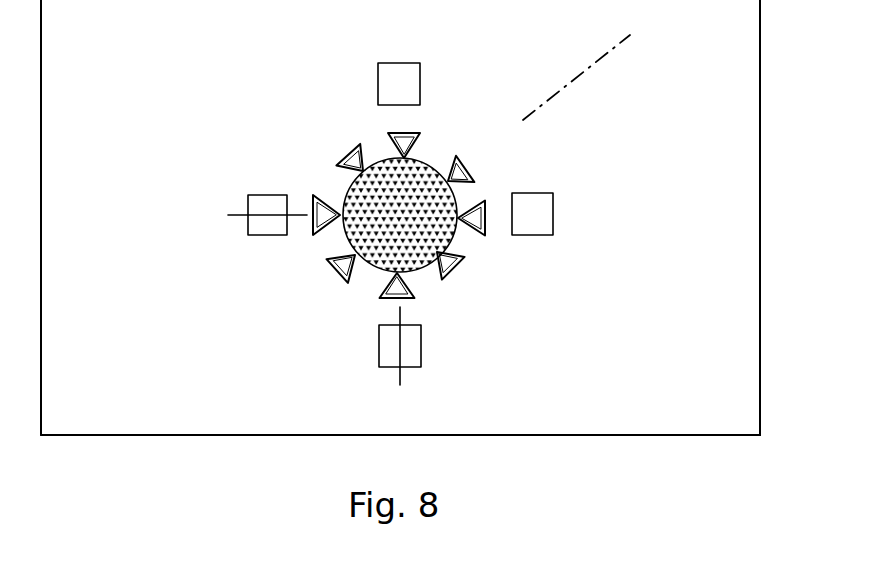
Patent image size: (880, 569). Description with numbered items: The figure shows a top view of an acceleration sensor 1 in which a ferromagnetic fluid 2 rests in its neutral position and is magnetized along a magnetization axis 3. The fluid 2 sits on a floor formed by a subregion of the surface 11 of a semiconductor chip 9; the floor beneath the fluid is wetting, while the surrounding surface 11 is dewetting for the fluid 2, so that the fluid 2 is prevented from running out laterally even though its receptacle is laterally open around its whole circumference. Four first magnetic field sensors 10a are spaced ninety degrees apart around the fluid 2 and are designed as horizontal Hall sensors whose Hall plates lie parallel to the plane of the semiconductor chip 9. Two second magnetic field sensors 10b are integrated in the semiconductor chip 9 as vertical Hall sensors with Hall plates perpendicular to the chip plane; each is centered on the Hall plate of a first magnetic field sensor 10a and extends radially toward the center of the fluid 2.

The acceleration sensor 1 is at (546, 472).
The ferromagnetic fluid 2 is at (453, 263).
The magnetization axis 3 is at (578, 76).
The semiconductor chip 9 is at (163, 415).
The first magnetic field sensors 10a is at (413, 87).
The second magnetic field sensors 10b is at (232, 212).
The surface 11 is at (710, 407).